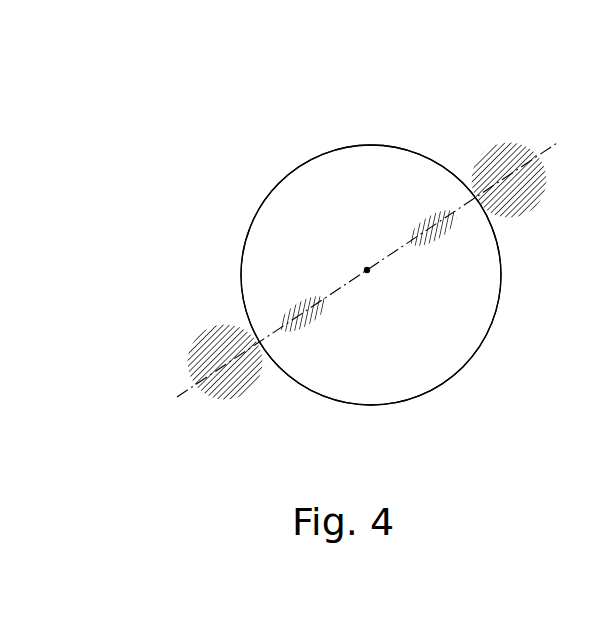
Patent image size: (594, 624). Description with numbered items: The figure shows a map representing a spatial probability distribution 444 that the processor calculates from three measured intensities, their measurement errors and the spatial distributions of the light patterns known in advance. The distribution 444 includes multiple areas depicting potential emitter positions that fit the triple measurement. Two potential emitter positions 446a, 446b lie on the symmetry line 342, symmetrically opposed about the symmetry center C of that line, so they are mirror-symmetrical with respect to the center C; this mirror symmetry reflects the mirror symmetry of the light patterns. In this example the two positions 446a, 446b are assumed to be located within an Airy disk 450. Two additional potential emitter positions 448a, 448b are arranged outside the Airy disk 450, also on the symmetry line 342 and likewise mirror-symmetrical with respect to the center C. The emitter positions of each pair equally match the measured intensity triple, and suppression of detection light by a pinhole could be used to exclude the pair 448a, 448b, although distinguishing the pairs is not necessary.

The spatial probability distribution 444 is at (287, 123).
The Airy disk 450 is at (468, 362).
The symmetry center C is at (365, 270).
The symmetry line 342 is at (178, 397).
The additional potential emitter position 448a is at (495, 152).
The additional potential emitter position 448b is at (215, 348).
The potential emitter position 446a is at (423, 223).
The potential emitter position 446b is at (292, 312).